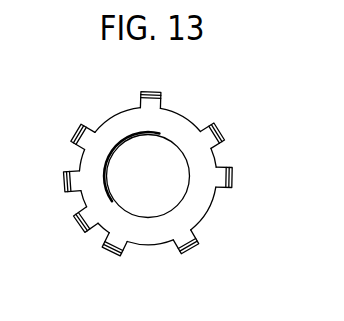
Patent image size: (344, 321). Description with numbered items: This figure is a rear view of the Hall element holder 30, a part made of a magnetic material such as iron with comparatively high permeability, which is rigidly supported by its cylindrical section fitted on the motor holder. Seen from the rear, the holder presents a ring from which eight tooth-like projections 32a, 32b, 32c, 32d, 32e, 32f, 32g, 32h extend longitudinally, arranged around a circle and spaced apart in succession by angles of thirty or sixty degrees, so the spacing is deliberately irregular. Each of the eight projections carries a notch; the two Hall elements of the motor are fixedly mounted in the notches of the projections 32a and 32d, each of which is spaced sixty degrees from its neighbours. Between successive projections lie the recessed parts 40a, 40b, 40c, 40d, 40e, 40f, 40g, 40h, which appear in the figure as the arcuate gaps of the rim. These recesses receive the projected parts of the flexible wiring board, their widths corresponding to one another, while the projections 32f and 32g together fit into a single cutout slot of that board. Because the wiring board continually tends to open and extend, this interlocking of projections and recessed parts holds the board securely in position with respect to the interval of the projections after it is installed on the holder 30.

The Hall element holder 30 is at (40, 85).
The tooth-like projection 32a is at (149, 91).
The tooth-like projection 32b is at (224, 127).
The tooth-like projection 32c is at (240, 181).
The tooth-like projection 32d is at (201, 240).
The tooth-like projection 32e is at (122, 258).
The tooth-like projection 32f is at (79, 231).
The tooth-like projection 32g is at (66, 184).
The tooth-like projection 32h is at (75, 135).
The recessed part 40a is at (210, 212).
The recessed part 40b is at (165, 248).
The recessed part 40c is at (101, 236).
The recessed part 40d is at (82, 199).
The recessed part 40e is at (84, 158).
The recessed part 40f is at (117, 122).
The recessed part 40g is at (185, 122).
The recessed part 40h is at (215, 157).